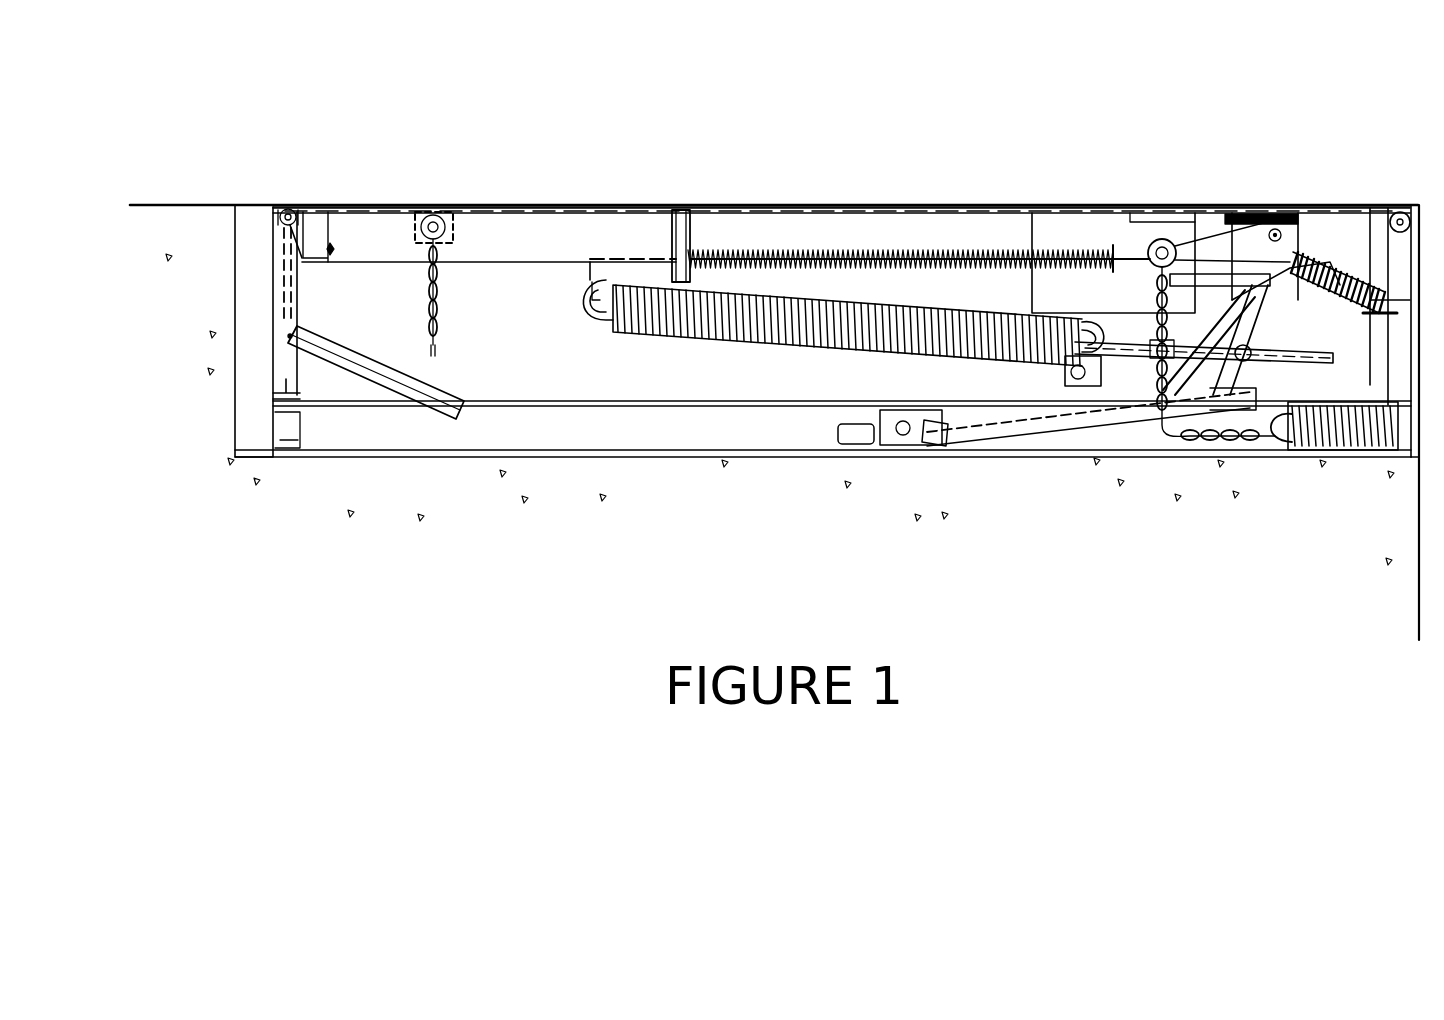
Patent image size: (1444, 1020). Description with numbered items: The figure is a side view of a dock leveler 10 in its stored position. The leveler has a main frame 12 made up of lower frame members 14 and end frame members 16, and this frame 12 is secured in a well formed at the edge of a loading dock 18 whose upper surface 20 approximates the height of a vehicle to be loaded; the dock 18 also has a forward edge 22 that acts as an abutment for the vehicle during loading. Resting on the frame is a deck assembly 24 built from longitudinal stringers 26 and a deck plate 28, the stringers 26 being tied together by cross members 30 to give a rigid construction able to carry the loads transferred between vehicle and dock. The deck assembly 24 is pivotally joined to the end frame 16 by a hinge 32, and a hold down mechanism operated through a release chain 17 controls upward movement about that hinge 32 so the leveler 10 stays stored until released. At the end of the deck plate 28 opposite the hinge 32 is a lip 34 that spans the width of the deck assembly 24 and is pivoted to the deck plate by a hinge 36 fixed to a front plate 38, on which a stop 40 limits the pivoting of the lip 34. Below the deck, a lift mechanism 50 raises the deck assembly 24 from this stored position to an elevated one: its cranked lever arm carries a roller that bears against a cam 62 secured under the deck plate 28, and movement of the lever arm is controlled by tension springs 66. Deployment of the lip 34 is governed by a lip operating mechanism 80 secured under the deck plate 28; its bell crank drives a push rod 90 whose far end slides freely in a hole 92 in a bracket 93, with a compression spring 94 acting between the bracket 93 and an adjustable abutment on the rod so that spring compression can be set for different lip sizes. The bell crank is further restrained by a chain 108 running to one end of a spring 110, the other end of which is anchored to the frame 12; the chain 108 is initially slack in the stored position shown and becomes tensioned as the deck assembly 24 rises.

The dock leveler 10 is at (556, 180).
The main frame 12 is at (556, 436).
The lower frame members 14 is at (422, 440).
The end frame members 16 is at (285, 383).
The release chain 17 is at (430, 295).
The loading dock 18 is at (195, 263).
The upper surface 20 is at (165, 204).
The forward edge 22 is at (1416, 576).
The deck assembly 24 is at (511, 205).
The longitudinal stringers 26 is at (488, 243).
The deck plate 28 is at (621, 205).
The cross members 30 is at (358, 205).
The hinge 32 is at (282, 203).
The lip 34 is at (1425, 352).
The hinge 36 is at (1390, 205).
The front plate 38 is at (1442, 200).
The stop 40 is at (1362, 318).
The lift mechanism 50 is at (1086, 445).
The cam 62 is at (1050, 205).
The tension springs 66 is at (730, 330).
The lip operating mechanism 80 is at (1192, 238).
The push rod 90 is at (600, 278).
The hole 92 is at (648, 205).
The bracket 93 is at (712, 205).
The compression spring 94 is at (876, 205).
The chain 108 is at (1165, 452).
The spring 110 is at (1322, 450).